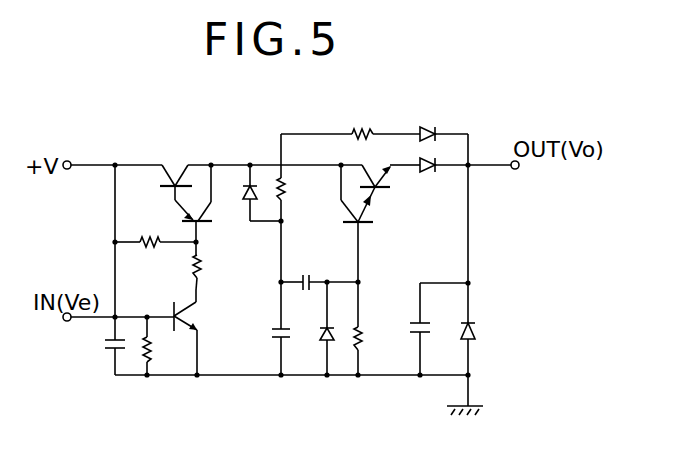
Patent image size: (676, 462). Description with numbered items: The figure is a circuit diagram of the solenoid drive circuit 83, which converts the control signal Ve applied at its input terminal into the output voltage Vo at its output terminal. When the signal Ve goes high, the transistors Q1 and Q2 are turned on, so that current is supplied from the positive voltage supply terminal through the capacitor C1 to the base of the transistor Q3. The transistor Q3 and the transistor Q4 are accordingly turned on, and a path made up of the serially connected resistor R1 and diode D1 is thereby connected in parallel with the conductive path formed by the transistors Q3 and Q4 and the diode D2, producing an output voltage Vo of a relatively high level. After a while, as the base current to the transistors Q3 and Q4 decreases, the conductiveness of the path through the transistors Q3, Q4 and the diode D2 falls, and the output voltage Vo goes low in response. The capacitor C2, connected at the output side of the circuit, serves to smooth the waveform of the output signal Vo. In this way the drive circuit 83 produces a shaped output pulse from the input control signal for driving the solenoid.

The solenoid drive circuit 83 is at (153, 151).
The transistor Q1 is at (180, 184).
The transistor Q2 is at (203, 225).
The transistor Q3 is at (363, 226).
The transistor Q4 is at (386, 189).
The resistor R1 is at (361, 121).
The diode D1 is at (432, 122).
The diode D2 is at (439, 179).
The capacitor C1 is at (306, 274).
The capacitor C2 is at (410, 330).